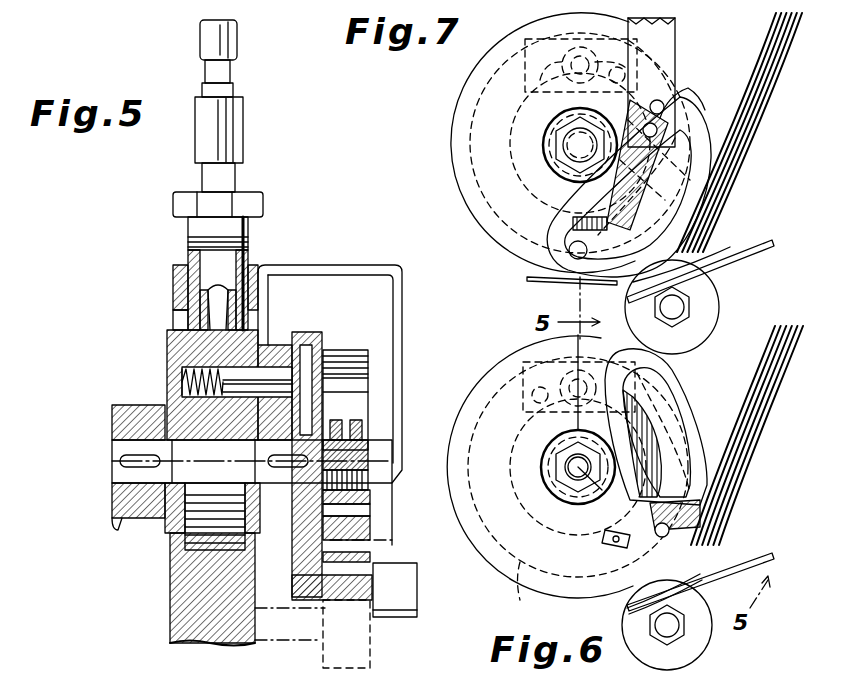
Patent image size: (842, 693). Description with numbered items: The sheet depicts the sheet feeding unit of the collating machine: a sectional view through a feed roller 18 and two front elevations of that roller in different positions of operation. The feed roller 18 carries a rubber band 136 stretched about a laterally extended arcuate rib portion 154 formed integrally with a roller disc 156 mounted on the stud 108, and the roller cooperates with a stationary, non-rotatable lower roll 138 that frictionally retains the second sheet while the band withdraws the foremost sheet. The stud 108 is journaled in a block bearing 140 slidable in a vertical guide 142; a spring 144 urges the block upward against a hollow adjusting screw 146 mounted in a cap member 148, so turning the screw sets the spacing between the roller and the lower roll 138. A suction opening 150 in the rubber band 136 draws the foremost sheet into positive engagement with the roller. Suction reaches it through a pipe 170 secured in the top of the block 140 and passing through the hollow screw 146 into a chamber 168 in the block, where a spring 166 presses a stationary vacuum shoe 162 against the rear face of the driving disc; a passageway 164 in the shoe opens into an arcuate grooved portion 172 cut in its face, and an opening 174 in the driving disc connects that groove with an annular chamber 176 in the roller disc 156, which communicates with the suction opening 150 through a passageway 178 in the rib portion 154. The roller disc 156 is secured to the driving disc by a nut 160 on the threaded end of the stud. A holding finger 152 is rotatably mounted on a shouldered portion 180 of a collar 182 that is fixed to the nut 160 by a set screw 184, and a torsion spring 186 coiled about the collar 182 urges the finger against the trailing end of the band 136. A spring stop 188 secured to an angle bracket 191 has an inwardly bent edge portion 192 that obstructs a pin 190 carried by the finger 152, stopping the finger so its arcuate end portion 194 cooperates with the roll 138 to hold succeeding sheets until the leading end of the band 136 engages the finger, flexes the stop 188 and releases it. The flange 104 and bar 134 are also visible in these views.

In FIG. 5, the feed roller 18 is at (99, 310).
In FIG. 5, the flange 104 is at (112, 412).
In FIG. 5, the stud 108 is at (112, 455).
In FIG. 6, the belt end bar 134 is at (736, 556).
In FIG. 7, the belt end bar 134 is at (733, 250).
In FIG. 5, the rubber band 136 is at (368, 360).
In FIG. 6, the rubber band 136 is at (675, 385).
In FIG. 7, the rubber band 136 is at (705, 178).
In FIG. 5, the lower roll 138 is at (375, 655).
In FIG. 6, the lower roll 138 is at (690, 652).
In FIG. 7, the lower roll 138 is at (720, 305).
In FIG. 5, the block bearing 140 is at (170, 362).
In FIG. 5, the vertical guide 142 is at (172, 330).
In FIG. 5, the spring 144 is at (190, 535).
In FIG. 5, the hollow adjusting screw 146 is at (250, 246).
In FIG. 5, the cap member 148 is at (178, 286).
In FIG. 5, the suction opening 150 is at (290, 332).
In FIG. 6, the suction opening 150 is at (686, 600).
In FIG. 7, the suction opening 150 is at (570, 289).
In FIG. 5, the holding finger 152 is at (370, 520).
In FIG. 6, the holding finger 152 is at (630, 565).
In FIG. 7, the holding finger 152 is at (695, 95).
In FIG. 5, the arcuate rib portion 154 is at (372, 560).
In FIG. 6, the arcuate rib portion 154 is at (668, 418).
In FIG. 5, the roller disc 156 is at (345, 350).
In FIG. 5, the nut 160 is at (368, 448).
In FIG. 5, the vacuum shoe 162 is at (275, 330).
In FIG. 6, the vacuum shoe 162 is at (530, 432).
In FIG. 5, the passageway 164 is at (250, 345).
In FIG. 7, the passageway 164 is at (660, 318).
In FIG. 5, the spring 166 is at (182, 377).
In FIG. 5, the chamber 168 is at (182, 390).
In FIG. 5, the pipe 170 is at (215, 266).
In FIG. 5, the arcuate grooved portion 172 is at (348, 406).
In FIG. 6, the arcuate grooved portion 172 is at (535, 380).
In FIG. 5, the opening 174 is at (368, 392).
In FIG. 6, the opening 174 is at (545, 375).
In FIG. 5, the annular chamber 176 is at (368, 378).
In FIG. 6, the annular chamber 176 is at (519, 588).
In FIG. 5, the passageway 178 is at (345, 572).
In FIG. 6, the passageway 178 is at (600, 527).
In FIG. 5, the shouldered portion 180 is at (345, 432).
In FIG. 5, the collar 182 is at (355, 440).
In FIG. 5, the set screw 184 is at (370, 492).
In FIG. 5, the torsion spring 186 is at (370, 505).
In FIG. 5, the spring stop 188 is at (390, 480).
In FIG. 6, the spring stop 188 is at (705, 480).
In FIG. 7, the spring stop 188 is at (575, 190).
In FIG. 5, the pin 190 is at (398, 539).
In FIG. 6, the pin 190 is at (603, 540).
In FIG. 5, the angle bracket 191 is at (393, 290).
In FIG. 7, the angle bracket 191 is at (675, 30).
In FIG. 7, the inwardly bent edge portion 192 is at (665, 212).
In FIG. 6, the arcuate end portion 194 is at (622, 604).
In FIG. 7, the arcuate end portion 194 is at (690, 100).